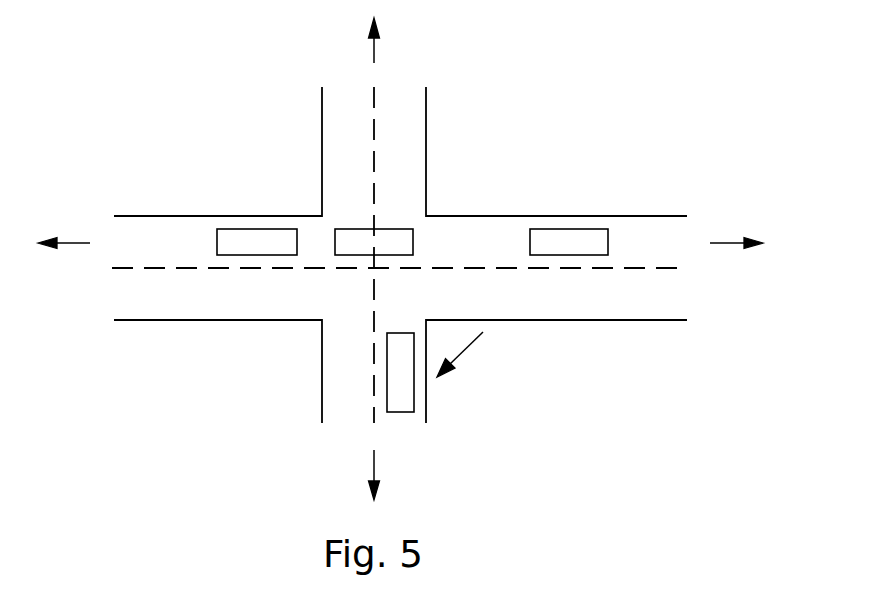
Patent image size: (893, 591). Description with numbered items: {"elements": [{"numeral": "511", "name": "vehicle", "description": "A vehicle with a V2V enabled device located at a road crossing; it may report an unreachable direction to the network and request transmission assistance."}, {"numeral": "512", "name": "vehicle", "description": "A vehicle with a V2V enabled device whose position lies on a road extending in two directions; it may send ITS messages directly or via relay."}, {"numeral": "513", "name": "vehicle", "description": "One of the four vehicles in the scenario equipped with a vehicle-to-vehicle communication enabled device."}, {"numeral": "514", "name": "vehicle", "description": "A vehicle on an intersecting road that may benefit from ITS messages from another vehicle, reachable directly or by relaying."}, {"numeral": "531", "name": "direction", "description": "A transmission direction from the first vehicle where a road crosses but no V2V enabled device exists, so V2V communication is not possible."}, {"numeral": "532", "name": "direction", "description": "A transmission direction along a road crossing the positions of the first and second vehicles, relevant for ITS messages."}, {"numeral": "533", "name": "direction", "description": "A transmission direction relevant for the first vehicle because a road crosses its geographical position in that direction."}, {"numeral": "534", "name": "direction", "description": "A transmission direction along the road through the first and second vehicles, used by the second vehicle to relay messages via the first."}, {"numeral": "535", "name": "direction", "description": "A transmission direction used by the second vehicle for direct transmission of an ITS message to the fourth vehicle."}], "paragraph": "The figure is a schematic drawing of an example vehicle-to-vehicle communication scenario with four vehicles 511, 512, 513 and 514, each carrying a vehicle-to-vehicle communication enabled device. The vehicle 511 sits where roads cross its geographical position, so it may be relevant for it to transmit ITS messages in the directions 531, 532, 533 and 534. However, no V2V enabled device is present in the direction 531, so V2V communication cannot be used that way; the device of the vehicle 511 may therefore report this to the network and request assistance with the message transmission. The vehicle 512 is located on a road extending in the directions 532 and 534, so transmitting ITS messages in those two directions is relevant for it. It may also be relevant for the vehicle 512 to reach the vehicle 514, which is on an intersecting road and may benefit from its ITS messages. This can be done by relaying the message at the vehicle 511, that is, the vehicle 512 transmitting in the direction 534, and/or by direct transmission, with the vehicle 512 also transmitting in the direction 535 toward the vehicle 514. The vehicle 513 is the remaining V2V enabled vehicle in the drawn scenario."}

The central intersection detector 511 is at (374, 242).
The east approach detector 512 is at (569, 242).
The west approach detector 513 is at (257, 242).
The south approach detector 514 is at (405, 372).
The northbound travel direction 531 is at (374, 51).
The eastbound travel direction 532 is at (728, 234).
The southbound travel direction 533 is at (374, 462).
The westbound travel direction 534 is at (72, 233).
The vehicle turning movement 535 is at (481, 354).